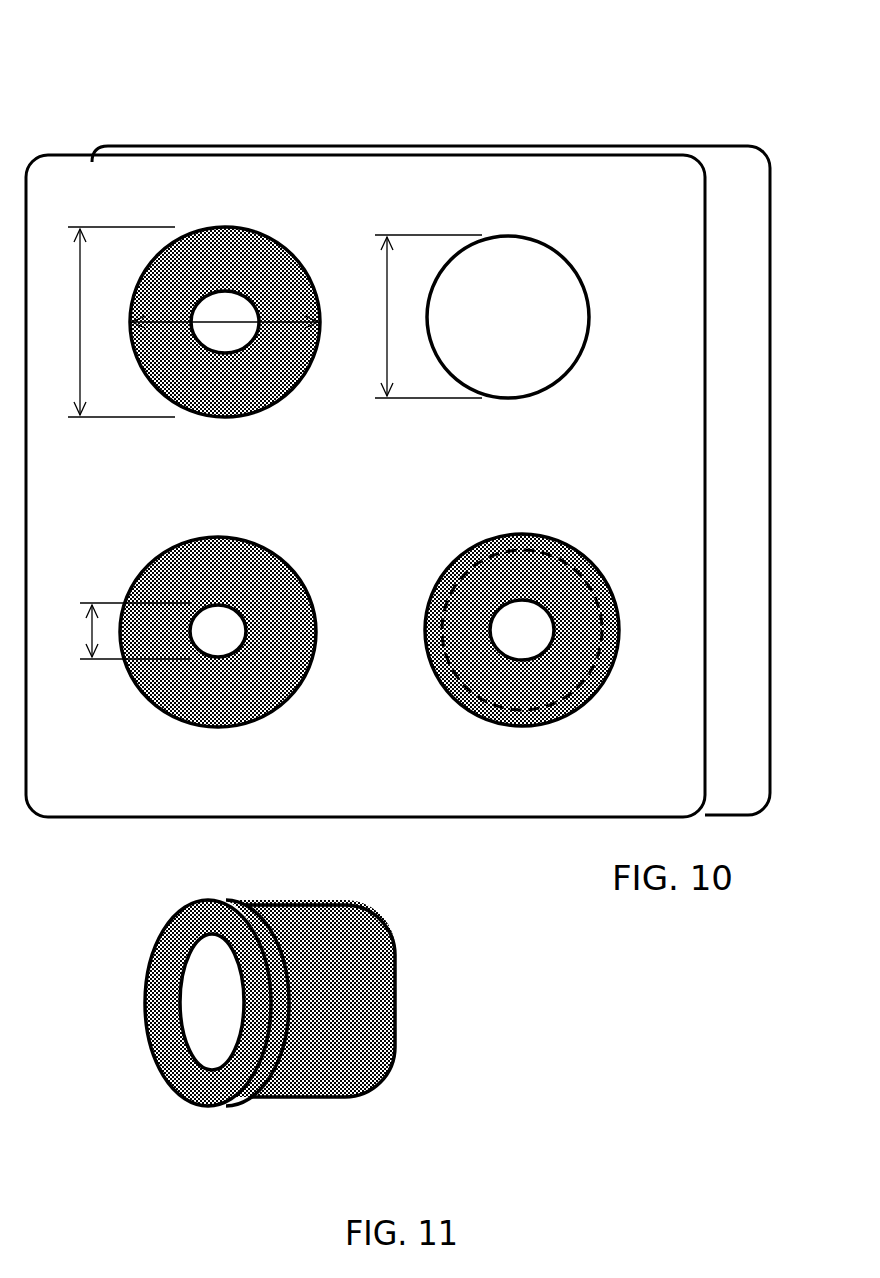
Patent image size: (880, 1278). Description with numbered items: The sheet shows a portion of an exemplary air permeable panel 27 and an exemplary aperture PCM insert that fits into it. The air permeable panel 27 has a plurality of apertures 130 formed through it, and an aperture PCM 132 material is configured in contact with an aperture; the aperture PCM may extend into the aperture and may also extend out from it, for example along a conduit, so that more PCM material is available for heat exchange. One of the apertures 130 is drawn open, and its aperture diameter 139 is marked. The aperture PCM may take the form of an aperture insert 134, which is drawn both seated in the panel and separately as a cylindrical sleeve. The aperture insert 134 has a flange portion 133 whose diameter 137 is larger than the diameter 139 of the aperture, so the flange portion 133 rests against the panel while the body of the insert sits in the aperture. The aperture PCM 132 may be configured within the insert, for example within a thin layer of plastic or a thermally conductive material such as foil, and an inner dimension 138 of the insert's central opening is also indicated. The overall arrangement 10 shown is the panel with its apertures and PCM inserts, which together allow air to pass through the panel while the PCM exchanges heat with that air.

In FIG. 10, the assembly 10 is at (722, 110).
In FIG. 10, the air permeable panel 27 is at (400, 200).
In FIG. 10, the aperture 130 is at (512, 285).
In FIG. 10, the aperture PCM 132 is at (540, 535).
In FIG. 11, the aperture PCM 132 is at (287, 978).
In FIG. 11, the flange portion 133 is at (153, 947).
In FIG. 10, the aperture insert 134 is at (263, 580).
In FIG. 11, the aperture insert 134 is at (397, 955).
In FIG. 10, the diameter of the flange portion 137 is at (184, 322).
In FIG. 10, the inner diameter 138 is at (119, 631).
In FIG. 10, the diameter of the aperture 139 is at (418, 316).